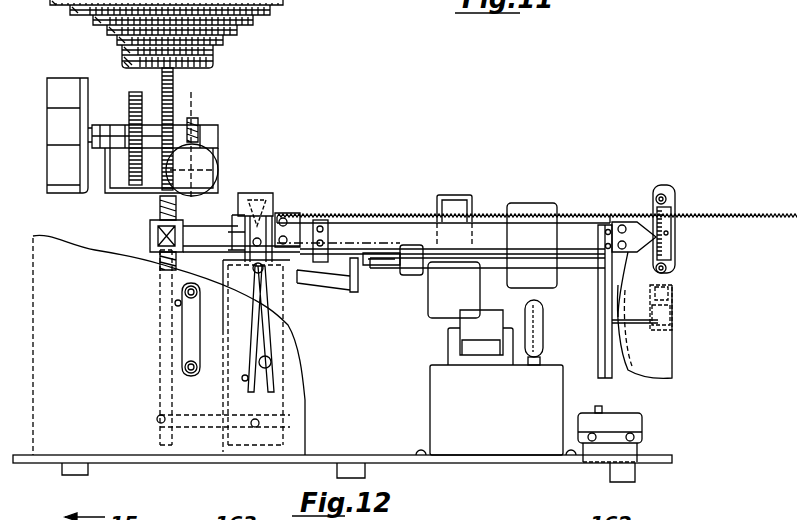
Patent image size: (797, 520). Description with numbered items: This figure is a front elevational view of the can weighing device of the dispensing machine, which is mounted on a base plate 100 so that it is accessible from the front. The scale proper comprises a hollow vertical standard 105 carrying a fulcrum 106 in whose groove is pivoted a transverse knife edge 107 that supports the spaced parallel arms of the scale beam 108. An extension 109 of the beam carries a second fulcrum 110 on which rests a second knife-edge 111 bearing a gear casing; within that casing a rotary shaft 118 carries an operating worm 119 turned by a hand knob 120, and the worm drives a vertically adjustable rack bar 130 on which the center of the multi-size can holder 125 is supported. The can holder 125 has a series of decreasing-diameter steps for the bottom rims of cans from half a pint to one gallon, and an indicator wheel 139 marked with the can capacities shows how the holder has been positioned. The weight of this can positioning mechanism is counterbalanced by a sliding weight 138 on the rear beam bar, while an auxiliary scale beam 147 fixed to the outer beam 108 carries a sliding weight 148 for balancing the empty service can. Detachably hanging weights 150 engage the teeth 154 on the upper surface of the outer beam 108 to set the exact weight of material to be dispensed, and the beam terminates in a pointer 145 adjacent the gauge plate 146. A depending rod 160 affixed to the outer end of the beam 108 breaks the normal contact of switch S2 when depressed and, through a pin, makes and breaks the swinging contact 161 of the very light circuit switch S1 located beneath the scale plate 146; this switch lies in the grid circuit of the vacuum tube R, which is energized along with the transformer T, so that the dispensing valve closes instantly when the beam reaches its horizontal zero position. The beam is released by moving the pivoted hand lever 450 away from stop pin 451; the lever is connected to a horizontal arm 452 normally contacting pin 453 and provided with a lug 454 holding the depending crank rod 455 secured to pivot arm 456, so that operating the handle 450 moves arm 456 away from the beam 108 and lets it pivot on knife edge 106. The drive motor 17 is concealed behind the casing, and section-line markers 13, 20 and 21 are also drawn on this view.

The can holder 125 is at (283, 10).
The rack bar 130 is at (175, 72).
The indicator wheel 139 is at (88, 92).
The rotary shaft 118 is at (220, 135).
The operating worm 119 is at (198, 120).
The hand knob 120 is at (203, 172).
The drive motor 17 is at (180, 92).
The second knife-edge 111 is at (160, 214).
The second fulcrum 110 is at (152, 241).
The extension of the scale beam 109 is at (228, 236).
The transverse knife edge 107 is at (262, 200).
The fulcrum 106 is at (284, 222).
The hollow vertical standard 105 is at (290, 325).
The stop pin 451 is at (176, 306).
The arm 452 is at (153, 372).
The pin 453 is at (243, 379).
The lug 454 is at (272, 363).
The pivoted hand lever 450 is at (140, 385).
The depending crank rod 455 is at (290, 285).
The pivot arm 456 is at (354, 293).
The section line 13 is at (330, 420).
The scale beam 108 is at (420, 222).
The teeth 154 is at (392, 243).
The detachably hanging weights 150 is at (470, 190).
The sliding weight 138 is at (530, 192).
The auxiliary scale beam 147 is at (378, 270).
The sliding weight 148 is at (412, 278).
The transformer T is at (495, 322).
The vacuum tube R is at (544, 336).
The section line 20 is at (578, 302).
The depending rod 160 is at (603, 350).
The pointer 145 is at (618, 222).
The gauge plate 146 is at (666, 218).
The swinging contact 161 is at (665, 311).
The circuit switch S1 is at (644, 342).
The section line 21 is at (743, 362).
The switch S2 is at (642, 425).
The base plate 100 is at (668, 462).